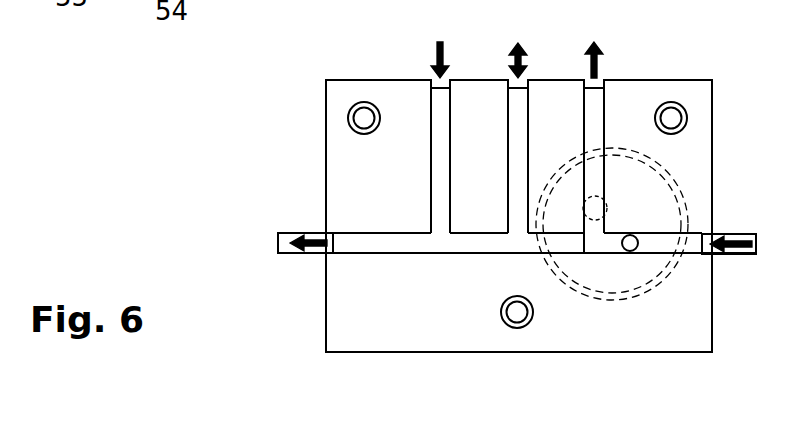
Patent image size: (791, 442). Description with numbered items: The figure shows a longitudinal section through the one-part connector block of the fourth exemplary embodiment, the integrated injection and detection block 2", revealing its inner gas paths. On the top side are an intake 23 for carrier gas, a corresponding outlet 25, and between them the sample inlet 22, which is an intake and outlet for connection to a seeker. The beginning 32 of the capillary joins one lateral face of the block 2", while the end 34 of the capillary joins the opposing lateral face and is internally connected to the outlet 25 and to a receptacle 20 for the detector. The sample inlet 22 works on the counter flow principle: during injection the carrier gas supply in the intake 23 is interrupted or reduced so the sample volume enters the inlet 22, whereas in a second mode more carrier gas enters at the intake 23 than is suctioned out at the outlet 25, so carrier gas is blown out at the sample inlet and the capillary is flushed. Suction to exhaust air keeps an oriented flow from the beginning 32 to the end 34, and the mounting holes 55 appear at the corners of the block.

The integrated injection and detection block 2 is at (293, 375).
The receptacle for the detector 20 is at (633, 252).
The sample inlet 22 is at (516, 44).
The intake for carrier gas 23 is at (438, 44).
The outlet 25 is at (594, 44).
The beginning of the capillary 32 is at (322, 232).
The end of the capillary 34 is at (713, 237).
The fastening hole 55 is at (362, 115).